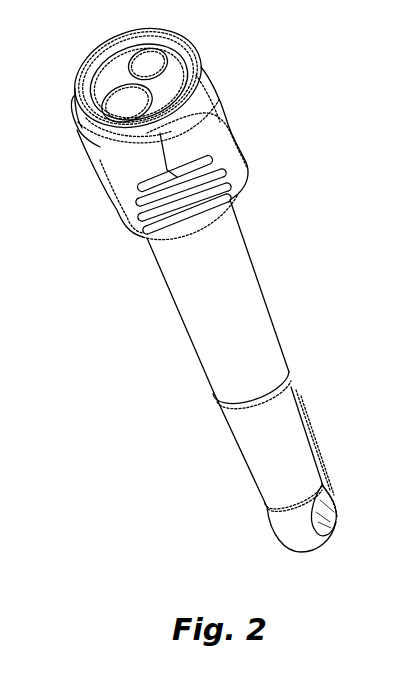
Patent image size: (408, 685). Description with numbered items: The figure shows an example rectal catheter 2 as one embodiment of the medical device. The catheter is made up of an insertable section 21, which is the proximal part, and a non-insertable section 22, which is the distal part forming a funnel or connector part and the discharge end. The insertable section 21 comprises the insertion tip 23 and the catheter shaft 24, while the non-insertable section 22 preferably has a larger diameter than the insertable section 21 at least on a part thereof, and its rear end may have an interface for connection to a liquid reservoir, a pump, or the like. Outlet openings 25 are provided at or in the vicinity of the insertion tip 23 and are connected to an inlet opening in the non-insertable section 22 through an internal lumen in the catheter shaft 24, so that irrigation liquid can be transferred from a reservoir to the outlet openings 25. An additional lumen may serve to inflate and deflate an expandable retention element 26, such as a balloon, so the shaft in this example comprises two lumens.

The rectal catheter 2 is at (142, 315).
The insertable section 21 is at (157, 262).
The non-insertable section 22 is at (237, 148).
The insertion tip 23 is at (288, 527).
The catheter shaft 24 is at (265, 325).
The outlet openings 25 is at (322, 508).
The expandable retention element 26 is at (247, 453).